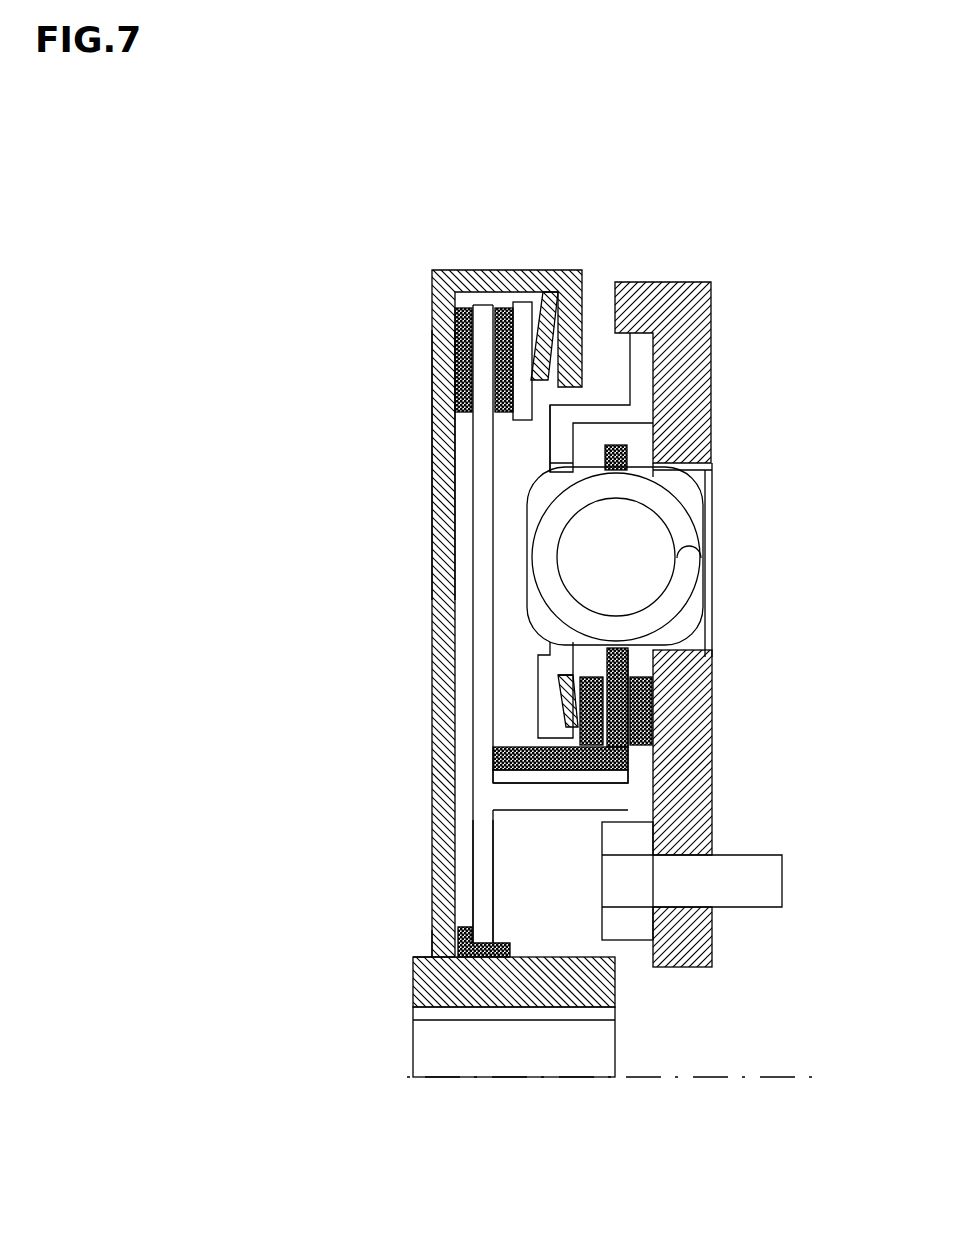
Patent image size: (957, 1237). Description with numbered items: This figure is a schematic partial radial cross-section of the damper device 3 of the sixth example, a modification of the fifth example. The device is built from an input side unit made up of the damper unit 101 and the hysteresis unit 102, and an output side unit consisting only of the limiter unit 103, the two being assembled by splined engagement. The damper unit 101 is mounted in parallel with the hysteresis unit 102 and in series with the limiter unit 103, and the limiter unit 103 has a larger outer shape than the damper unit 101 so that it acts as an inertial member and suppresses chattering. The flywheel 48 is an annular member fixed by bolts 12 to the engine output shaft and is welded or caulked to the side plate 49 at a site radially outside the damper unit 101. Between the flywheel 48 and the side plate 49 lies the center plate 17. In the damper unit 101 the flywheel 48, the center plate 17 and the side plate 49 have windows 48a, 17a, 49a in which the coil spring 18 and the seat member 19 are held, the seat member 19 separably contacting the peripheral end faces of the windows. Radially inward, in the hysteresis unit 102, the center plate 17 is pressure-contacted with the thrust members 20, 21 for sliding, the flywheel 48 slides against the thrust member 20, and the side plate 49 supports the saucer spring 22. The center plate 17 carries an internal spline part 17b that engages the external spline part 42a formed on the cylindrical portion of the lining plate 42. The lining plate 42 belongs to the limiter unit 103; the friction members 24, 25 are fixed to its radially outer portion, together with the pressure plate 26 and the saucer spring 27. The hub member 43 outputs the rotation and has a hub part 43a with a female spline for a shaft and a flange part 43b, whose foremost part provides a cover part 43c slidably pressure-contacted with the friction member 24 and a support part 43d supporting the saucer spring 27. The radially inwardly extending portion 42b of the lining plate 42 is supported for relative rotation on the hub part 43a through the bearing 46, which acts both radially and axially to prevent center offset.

The damper device 3 is at (810, 249).
The bolt 12 is at (763, 880).
The center plate 17 is at (568, 715).
The window 17a is at (648, 668).
The internal spline part 17b is at (555, 765).
The coil spring 18 is at (690, 573).
The seat member 19 is at (704, 500).
The thrust member 20 is at (648, 727).
The thrust member 21 is at (562, 735).
The saucer spring 22 is at (538, 703).
The friction member 24 is at (462, 328).
The friction member 25 is at (488, 292).
The pressure plate 26 is at (520, 312).
The saucer spring 27 is at (553, 312).
The lining plate 42 is at (488, 624).
The external spline part 42a is at (553, 790).
The radially inwardly extending portion 42b is at (485, 880).
The hub member 43 is at (478, 639).
The hub part 43a is at (413, 975).
The flange part 43b is at (432, 515).
The cover part 43c is at (432, 393).
The support part 43d is at (582, 326).
The bearing 46 is at (513, 948).
The flywheel 48 is at (705, 469).
The window 48a is at (707, 472).
The side plate 49 is at (512, 349).
The window 49a is at (550, 470).
The damper unit 101 is at (696, 556).
The hysteresis unit 102 is at (613, 804).
The limiter unit 103 is at (460, 639).